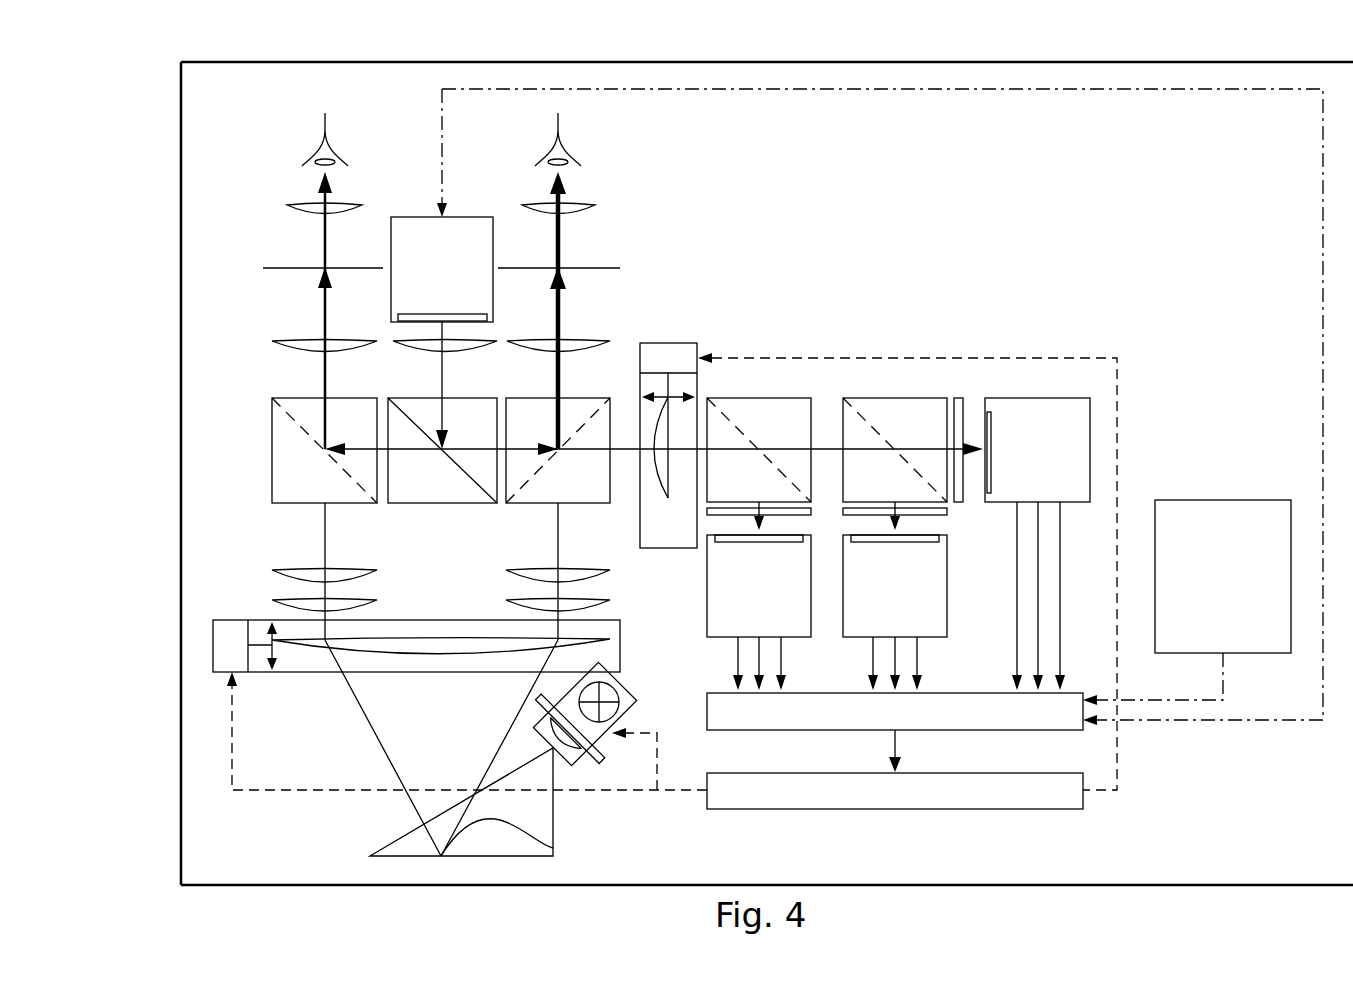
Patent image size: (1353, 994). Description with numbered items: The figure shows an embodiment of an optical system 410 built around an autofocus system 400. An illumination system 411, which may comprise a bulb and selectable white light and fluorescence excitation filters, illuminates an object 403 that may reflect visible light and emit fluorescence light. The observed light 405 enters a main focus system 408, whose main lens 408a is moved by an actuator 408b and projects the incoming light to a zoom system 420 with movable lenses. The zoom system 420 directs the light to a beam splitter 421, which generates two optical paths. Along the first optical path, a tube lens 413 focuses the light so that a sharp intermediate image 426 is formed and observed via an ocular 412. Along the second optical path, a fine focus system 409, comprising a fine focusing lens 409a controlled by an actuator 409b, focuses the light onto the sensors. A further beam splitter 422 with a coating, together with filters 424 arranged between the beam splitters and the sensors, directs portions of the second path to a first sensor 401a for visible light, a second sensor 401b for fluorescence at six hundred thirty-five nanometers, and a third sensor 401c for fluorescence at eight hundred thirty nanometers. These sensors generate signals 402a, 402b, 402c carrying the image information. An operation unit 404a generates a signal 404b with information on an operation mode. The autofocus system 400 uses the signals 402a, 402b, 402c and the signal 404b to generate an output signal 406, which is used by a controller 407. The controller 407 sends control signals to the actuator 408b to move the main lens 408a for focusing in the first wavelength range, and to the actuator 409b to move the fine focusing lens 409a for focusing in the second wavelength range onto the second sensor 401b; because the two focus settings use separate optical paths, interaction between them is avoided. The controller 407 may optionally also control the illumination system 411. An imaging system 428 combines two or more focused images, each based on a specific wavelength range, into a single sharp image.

The optical system 410 is at (1150, 50).
The autofocus system 400 is at (1164, 353).
The imaging system 428 is at (478, 216).
The ocular 412 is at (593, 205).
The intermediate image 426 is at (561, 268).
The tube lens 413 is at (583, 341).
The fine focus system 409 is at (635, 447).
The fine focusing lens 409a is at (660, 473).
The actuator 409b is at (669, 357).
The beam splitter 421 is at (541, 490).
The zoom system 420 is at (482, 568).
The beam splitter 422 is at (759, 398).
The filters 424 is at (958, 398).
The first sensor 401a is at (811, 563).
The second sensor 401b is at (843, 598).
The third sensor 401c is at (1037, 398).
The signal 402a is at (762, 665).
The signal 402b is at (917, 665).
The signal 402c is at (1040, 643).
The operation unit 404a is at (1224, 500).
The signal 404b is at (1224, 698).
The output signal 406 is at (900, 752).
The controller 407 is at (1083, 800).
The main focus system 408 is at (452, 640).
The main lens 408a is at (393, 648).
The actuator 408b is at (232, 628).
The object 403 is at (431, 830).
The observed light 405 is at (415, 818).
The illumination system 411 is at (584, 758).